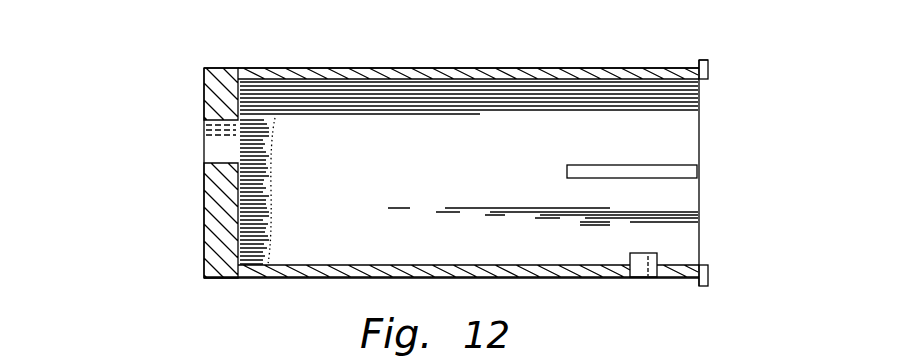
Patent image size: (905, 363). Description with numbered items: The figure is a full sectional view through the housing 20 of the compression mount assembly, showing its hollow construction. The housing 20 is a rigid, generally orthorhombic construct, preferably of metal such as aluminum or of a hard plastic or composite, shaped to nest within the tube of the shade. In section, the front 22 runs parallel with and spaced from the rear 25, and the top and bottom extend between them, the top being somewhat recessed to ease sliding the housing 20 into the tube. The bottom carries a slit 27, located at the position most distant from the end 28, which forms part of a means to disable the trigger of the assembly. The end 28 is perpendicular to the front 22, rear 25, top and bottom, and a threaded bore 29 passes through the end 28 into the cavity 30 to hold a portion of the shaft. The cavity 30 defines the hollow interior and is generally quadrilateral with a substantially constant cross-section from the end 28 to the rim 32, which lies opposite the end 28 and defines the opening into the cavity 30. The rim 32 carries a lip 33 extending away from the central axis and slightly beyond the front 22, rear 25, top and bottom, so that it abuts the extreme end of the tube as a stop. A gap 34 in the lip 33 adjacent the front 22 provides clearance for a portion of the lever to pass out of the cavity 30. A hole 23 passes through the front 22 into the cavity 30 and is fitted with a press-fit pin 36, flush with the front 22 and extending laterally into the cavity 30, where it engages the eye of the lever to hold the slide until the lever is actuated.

The housing 20 is at (165, 91).
The front 22 is at (306, 278).
The hole 23 is at (645, 268).
The rear 25 is at (350, 67).
The slit 27 is at (621, 163).
The end 28 is at (204, 233).
The threaded bore 29 is at (205, 140).
The cavity 30 is at (360, 199).
The rim 32 is at (710, 72).
The lip 33 is at (703, 60).
The gap 34 is at (710, 273).
The pin 36 is at (649, 258).